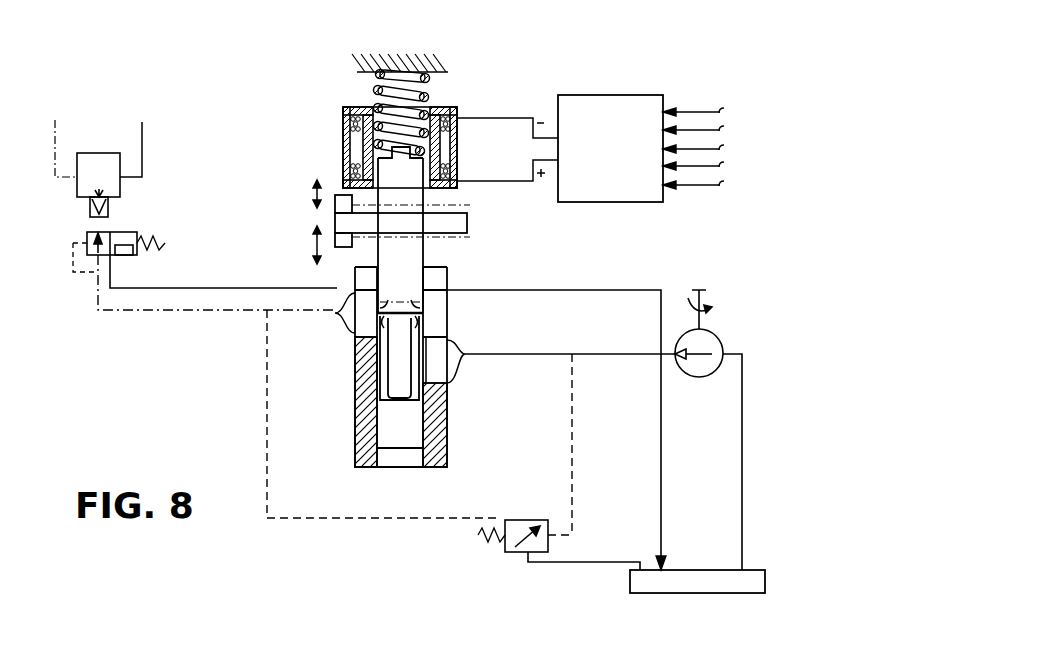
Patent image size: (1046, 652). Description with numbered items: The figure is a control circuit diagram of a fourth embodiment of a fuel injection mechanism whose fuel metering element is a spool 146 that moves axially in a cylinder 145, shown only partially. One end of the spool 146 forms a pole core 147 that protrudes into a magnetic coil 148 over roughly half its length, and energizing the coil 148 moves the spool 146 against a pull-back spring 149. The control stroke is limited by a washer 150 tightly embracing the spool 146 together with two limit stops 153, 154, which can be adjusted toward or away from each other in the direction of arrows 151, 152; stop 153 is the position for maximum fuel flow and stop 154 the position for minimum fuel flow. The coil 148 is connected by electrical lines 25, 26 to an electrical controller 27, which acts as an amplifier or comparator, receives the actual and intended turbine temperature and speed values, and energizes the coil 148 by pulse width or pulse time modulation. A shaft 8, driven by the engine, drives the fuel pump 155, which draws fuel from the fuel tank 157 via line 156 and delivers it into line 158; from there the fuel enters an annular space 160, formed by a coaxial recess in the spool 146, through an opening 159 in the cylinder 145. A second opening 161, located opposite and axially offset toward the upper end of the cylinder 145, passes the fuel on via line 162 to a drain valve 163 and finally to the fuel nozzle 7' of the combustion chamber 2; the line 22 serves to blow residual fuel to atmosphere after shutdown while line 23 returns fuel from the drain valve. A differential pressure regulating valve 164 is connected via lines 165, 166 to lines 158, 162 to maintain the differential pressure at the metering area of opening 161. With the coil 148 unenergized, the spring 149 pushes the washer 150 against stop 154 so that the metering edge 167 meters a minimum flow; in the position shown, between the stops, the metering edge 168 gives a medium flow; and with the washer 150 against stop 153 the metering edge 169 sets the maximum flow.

The combustion chamber 2 is at (148, 124).
The fuel nozzle 7' is at (123, 185).
The shaft 8 is at (712, 318).
The line 22 is at (198, 288).
The line 23 is at (73, 262).
The electrical line 25 is at (515, 182).
The electrical line 26 is at (525, 116).
The electrical controller 27 is at (617, 95).
The cylinder 145 is at (440, 438).
The spool 146 is at (423, 255).
The pole core 147 is at (428, 204).
The magnetic coil 148 is at (458, 137).
The pull-back spring 149 is at (430, 90).
The washer 150 is at (467, 233).
The arrow 151 is at (313, 194).
The arrow 152 is at (312, 244).
The limit stop 153 is at (343, 165).
The limit stop 154 is at (338, 252).
The fuel pump 155 is at (718, 345).
The line 156 is at (743, 445).
The fuel tank 157 is at (697, 595).
The line 158 is at (598, 354).
The opening 159 is at (440, 372).
The annular space 160 is at (447, 392).
The opening 161 is at (342, 380).
The line 162 is at (142, 313).
The drain valve 163 is at (130, 232).
The differential pressure regulating valve 164 is at (512, 552).
The line 165 is at (348, 520).
The line 166 is at (573, 446).
The metering edge 167 is at (400, 325).
The metering edge 168 is at (417, 323).
The metering edge 169 is at (418, 303).